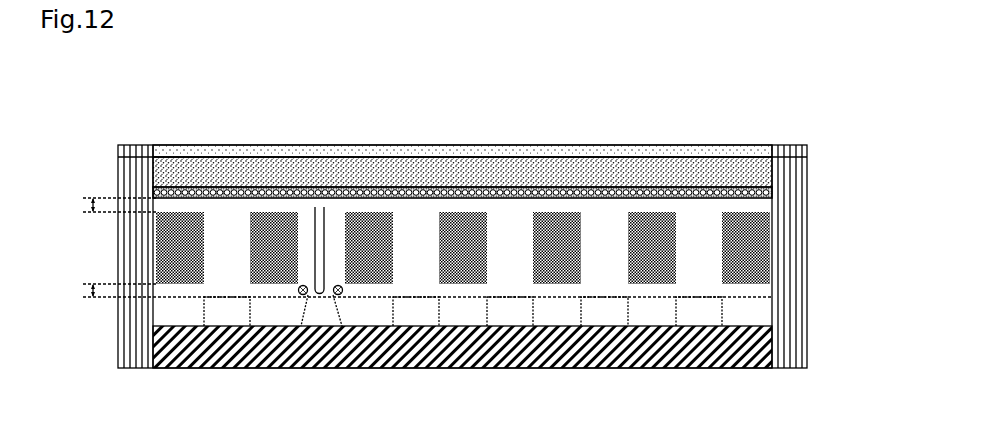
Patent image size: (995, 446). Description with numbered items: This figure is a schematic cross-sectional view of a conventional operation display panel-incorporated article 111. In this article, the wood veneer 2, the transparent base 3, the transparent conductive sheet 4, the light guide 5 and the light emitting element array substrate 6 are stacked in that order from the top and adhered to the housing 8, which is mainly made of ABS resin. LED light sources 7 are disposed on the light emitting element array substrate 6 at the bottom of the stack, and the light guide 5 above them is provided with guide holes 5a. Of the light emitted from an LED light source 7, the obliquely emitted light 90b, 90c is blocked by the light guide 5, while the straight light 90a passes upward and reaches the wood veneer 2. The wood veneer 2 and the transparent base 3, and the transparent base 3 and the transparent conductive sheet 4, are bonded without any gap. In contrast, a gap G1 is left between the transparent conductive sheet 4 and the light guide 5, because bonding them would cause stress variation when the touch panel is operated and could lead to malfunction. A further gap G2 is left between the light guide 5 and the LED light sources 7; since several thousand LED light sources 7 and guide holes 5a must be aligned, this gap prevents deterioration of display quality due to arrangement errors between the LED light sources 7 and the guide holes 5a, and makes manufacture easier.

The operation display panel-incorporated article 111 is at (834, 98).
The wood veneer 2 is at (806, 151).
The transparent base 3 is at (806, 160).
The transparent conductive sheet 4 is at (773, 193).
The light guide 5 is at (777, 250).
The guide holes 5a is at (305, 216).
The light emitting element array substrate 6 is at (773, 348).
The LED light source 7 is at (713, 310).
The housing 8 is at (133, 343).
The straight light 90a is at (320, 205).
The obliquely emitted light 90b is at (301, 295).
The obliquely emitted light 90c is at (340, 295).
The gap G1 is at (107, 204).
The gap G2 is at (414, 291).